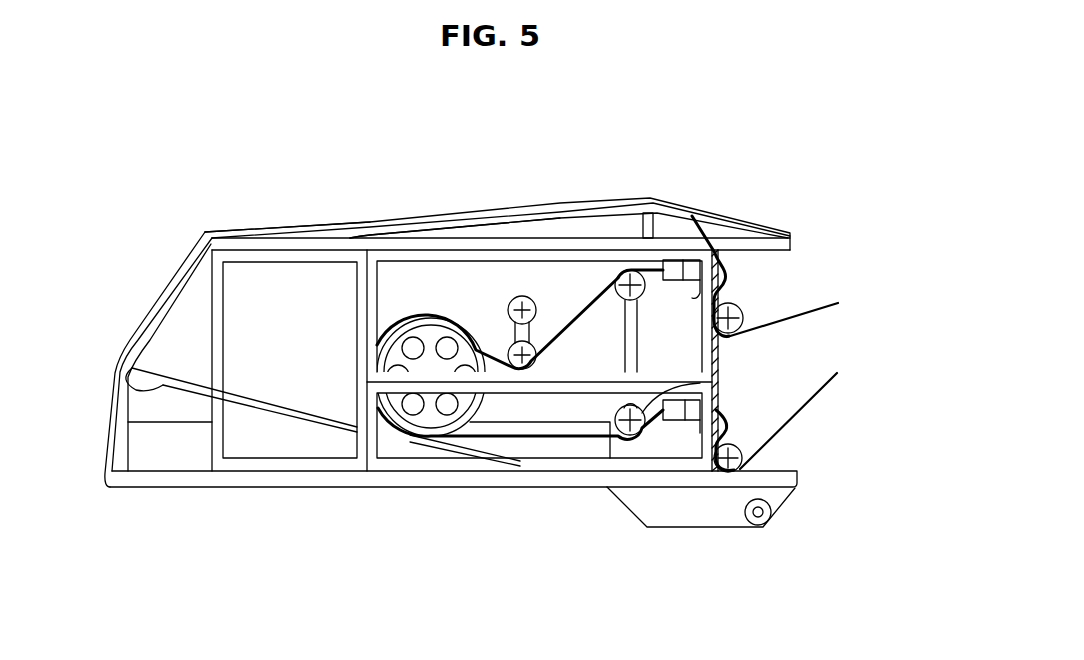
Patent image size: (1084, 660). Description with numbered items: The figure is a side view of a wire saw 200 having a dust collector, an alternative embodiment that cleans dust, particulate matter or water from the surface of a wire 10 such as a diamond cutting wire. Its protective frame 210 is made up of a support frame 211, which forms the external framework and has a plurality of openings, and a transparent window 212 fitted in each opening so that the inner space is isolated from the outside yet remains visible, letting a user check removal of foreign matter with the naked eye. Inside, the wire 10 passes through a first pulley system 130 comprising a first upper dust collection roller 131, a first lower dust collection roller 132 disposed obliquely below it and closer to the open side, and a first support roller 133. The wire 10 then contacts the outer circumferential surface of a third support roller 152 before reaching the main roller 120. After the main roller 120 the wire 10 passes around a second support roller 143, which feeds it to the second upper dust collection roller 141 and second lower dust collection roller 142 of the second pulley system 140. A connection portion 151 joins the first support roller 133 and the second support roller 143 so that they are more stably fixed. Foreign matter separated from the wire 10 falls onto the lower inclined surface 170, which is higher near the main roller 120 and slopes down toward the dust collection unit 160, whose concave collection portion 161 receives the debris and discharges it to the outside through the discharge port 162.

The wire saw having the dust collector 200 is at (822, 76).
The protective frame 210 is at (400, 170).
The support frame 211 is at (328, 242).
The transparent window 212 is at (390, 268).
The main roller 120 is at (485, 365).
The third support roller 152 is at (536, 344).
The connection portion 151 is at (637, 353).
The first pulley system 130 is at (760, 139).
The first support roller 133 is at (630, 268).
The first upper dust collection roller 131 is at (691, 214).
The first lower dust collection roller 132 is at (744, 300).
The wire 10 is at (800, 312).
The second pulley system 140 is at (898, 375).
The second support roller 143 is at (700, 383).
The second upper dust collection roller 141 is at (723, 413).
The second lower dust collection roller 142 is at (740, 448).
The lower inclined surface 170 is at (132, 392).
The dust collection unit 160 is at (760, 585).
The collection portion 161 is at (697, 515).
The discharge port 162 is at (758, 527).